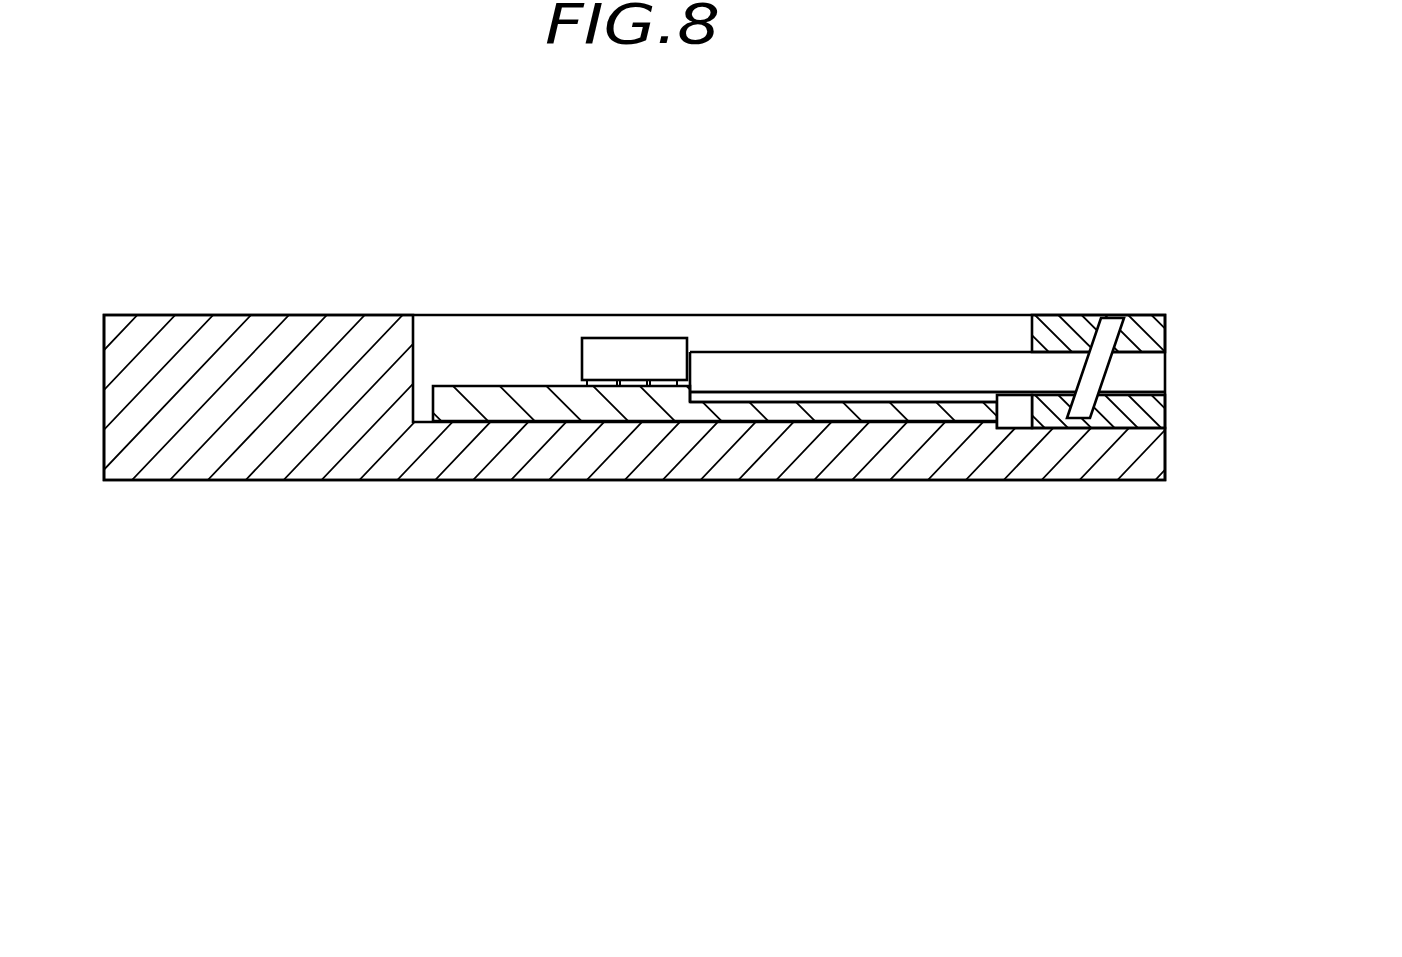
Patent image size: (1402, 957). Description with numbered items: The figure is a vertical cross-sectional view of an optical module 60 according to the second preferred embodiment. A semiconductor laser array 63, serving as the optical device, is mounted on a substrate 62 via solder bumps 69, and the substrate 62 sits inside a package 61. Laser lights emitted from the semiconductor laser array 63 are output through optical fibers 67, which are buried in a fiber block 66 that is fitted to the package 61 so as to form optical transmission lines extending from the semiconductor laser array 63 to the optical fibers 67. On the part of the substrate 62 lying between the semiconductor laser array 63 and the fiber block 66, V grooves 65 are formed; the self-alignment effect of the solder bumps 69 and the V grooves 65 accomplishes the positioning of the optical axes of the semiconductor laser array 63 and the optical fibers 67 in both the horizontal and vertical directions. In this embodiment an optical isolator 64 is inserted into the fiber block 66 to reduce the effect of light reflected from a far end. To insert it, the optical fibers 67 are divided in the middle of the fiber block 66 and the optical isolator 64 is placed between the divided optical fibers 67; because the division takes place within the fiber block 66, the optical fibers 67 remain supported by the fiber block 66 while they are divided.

The optical module 60 is at (377, 270).
The package 61 is at (262, 480).
The substrate 62 is at (500, 423).
The semiconductor laser array 63 is at (605, 345).
The optical isolator 64 is at (1115, 325).
The V grooves 65 is at (823, 399).
The fiber block 66 is at (1112, 417).
The optical fibers 67 is at (932, 357).
The solder bumps 69 is at (600, 384).